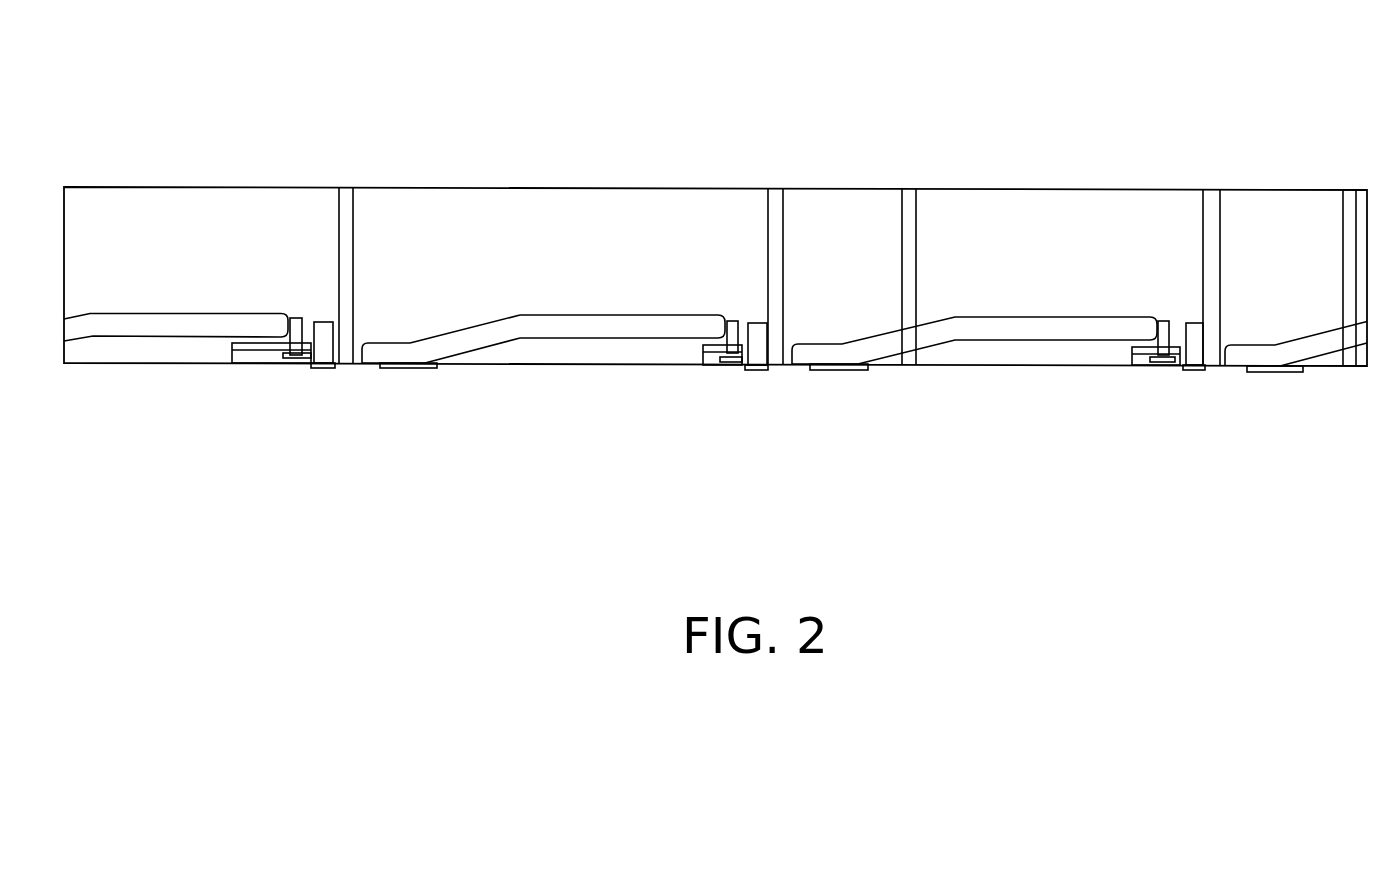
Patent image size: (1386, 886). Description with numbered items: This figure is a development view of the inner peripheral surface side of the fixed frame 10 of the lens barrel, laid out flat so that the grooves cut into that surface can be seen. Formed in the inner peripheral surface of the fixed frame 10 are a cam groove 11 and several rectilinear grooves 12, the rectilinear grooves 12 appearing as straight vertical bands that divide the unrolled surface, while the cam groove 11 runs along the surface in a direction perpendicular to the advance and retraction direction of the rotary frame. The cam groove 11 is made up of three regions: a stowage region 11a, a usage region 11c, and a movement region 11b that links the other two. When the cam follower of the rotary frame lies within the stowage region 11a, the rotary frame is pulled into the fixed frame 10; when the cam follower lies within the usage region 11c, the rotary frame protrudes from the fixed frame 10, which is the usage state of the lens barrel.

The fixed frame 10 is at (715, 197).
The cam groove 11 is at (715, 282).
The stowage region 11a is at (424, 343).
The movement region 11b is at (520, 310).
The usage region 11c is at (723, 312).
The rectilinear grooves 12 is at (348, 200).